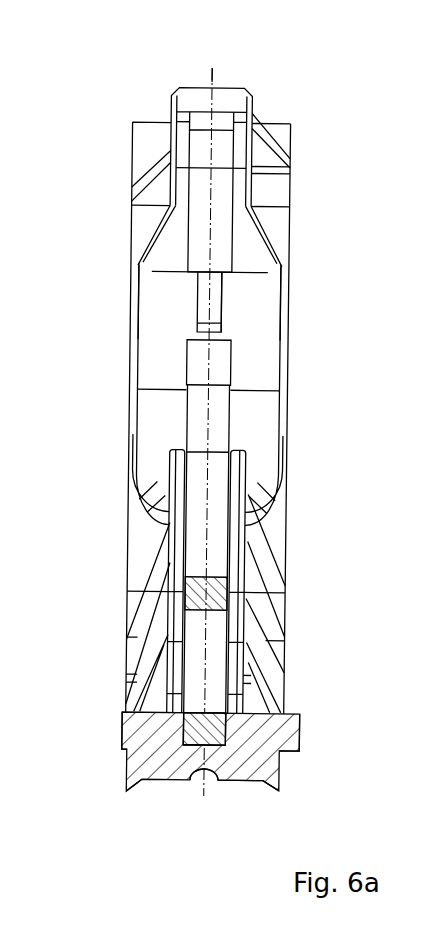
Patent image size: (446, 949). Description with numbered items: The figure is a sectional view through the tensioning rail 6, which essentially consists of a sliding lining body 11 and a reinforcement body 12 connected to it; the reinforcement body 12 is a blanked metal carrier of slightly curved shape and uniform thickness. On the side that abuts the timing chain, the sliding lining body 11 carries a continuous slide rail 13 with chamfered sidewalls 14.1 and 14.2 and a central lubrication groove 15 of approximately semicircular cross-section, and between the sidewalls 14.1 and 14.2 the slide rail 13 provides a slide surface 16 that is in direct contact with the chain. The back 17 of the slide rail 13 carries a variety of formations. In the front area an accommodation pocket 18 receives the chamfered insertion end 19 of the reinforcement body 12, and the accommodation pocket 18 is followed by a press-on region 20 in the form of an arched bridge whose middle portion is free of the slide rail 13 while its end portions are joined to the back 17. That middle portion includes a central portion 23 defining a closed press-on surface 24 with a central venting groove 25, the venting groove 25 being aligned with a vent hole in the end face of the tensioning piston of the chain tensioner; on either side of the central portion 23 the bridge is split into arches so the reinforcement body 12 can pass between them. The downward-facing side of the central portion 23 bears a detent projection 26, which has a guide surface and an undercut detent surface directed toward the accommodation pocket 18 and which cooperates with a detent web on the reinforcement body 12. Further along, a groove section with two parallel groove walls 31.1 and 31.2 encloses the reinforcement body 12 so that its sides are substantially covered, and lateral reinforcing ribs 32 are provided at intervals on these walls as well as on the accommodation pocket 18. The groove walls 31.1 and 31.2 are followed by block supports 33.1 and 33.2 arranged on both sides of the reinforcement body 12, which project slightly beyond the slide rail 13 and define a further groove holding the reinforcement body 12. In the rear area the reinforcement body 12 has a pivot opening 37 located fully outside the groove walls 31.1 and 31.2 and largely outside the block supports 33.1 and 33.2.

The tensioning rail 6 is at (272, 112).
The sliding lining body 11 is at (298, 466).
The reinforcement body 12 is at (213, 405).
The slide rail 13 is at (287, 768).
The chamfered sidewall 14.1 is at (131, 796).
The chamfered sidewall 14.2 is at (277, 793).
The central lubrication groove 15 is at (200, 781).
The slide surface 16 is at (244, 782).
The back of the slide rail 17 is at (274, 191).
The accommodation pocket 18 is at (219, 78).
The insertion end 19 is at (196, 146).
The press-on region 20 is at (149, 321).
The central portion 23 is at (236, 306).
The press-on surface 24 is at (255, 286).
The central venting groove 25 is at (194, 298).
The detent projection 26 is at (217, 381).
The groove wall 31.1 is at (179, 521).
The groove wall 31.2 is at (236, 517).
The lateral reinforcing rib 32 is at (147, 170).
The block support 33.1 is at (121, 730).
The block support 33.2 is at (274, 722).
The pivot opening 37 is at (218, 668).